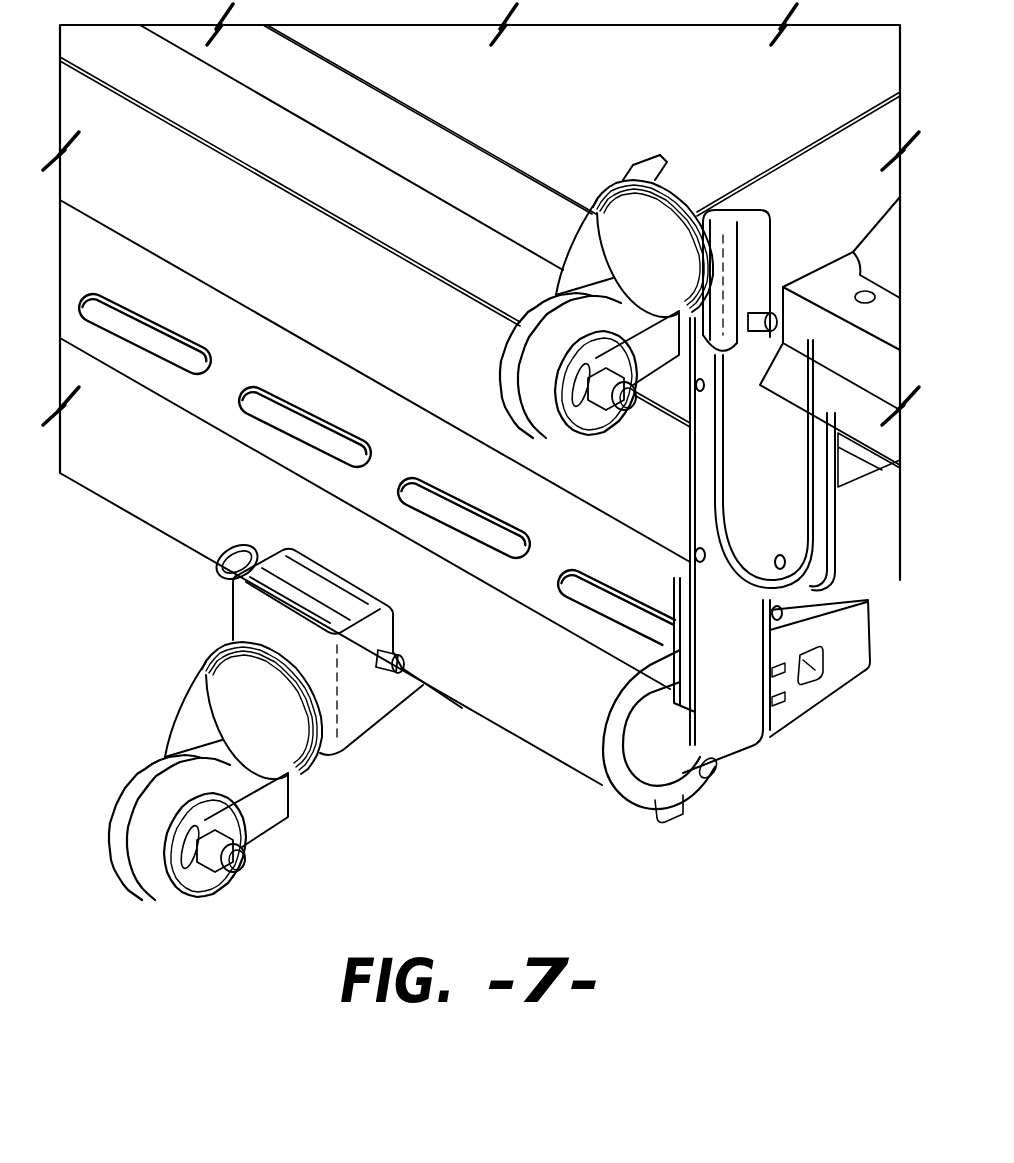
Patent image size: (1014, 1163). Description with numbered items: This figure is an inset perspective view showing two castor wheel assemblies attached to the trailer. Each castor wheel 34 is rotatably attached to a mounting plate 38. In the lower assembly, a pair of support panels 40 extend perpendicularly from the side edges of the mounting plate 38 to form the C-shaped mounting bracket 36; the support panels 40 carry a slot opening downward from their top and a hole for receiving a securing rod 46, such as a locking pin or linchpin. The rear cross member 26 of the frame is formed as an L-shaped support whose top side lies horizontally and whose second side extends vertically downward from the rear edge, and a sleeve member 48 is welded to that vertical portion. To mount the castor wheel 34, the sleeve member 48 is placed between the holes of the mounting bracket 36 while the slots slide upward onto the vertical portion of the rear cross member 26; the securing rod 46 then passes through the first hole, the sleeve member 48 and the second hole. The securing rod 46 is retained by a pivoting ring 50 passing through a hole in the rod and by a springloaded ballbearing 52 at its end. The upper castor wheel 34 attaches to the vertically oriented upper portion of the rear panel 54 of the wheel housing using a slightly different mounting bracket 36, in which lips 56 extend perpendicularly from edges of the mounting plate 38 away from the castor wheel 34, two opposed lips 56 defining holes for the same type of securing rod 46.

The rear cross member 26 is at (545, 725).
The castor wheel 34 is at (112, 822).
The mounting bracket 36 is at (232, 618).
The mounting plate 38 is at (207, 690).
The support panels 40 is at (267, 556).
The securing rod 46 is at (757, 340).
The sleeve member 48 is at (313, 603).
The pivoting ring 50 is at (225, 552).
The springloaded ballbearing 52 is at (768, 318).
The rear panel 54 is at (733, 697).
The lips 56 is at (662, 185).